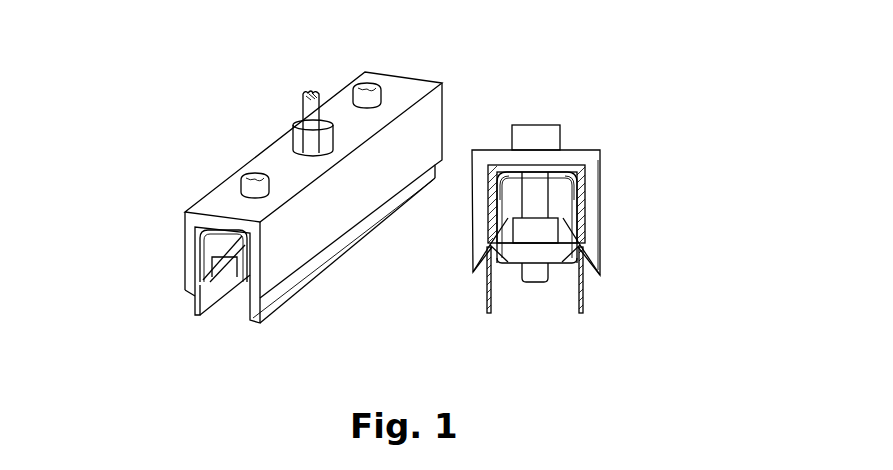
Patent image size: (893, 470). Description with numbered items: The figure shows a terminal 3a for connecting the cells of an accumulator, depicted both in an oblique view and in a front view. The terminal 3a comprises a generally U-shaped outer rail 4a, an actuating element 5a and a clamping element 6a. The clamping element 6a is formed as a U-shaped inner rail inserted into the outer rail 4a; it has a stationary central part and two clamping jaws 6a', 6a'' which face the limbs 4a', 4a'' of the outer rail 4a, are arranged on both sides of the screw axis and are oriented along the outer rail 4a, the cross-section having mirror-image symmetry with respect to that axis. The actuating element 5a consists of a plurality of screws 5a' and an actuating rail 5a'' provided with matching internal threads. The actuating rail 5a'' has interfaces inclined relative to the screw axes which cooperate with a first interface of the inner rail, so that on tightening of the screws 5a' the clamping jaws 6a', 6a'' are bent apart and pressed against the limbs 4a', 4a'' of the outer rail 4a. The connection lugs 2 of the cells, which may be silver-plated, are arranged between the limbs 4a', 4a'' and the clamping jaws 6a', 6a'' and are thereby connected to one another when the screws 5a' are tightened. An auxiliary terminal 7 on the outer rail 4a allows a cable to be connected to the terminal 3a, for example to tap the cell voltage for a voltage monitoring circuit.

The terminal 3a is at (118, 67).
The auxiliary terminal 7 is at (302, 104).
The outer rail 4a is at (480, 186).
The limb of the outer rail 4a' is at (645, 215).
The limb of the outer rail 4a'' is at (589, 263).
The actuating element 5a is at (631, 189).
The screw 5a' is at (422, 140).
The actuating rail 5a'' is at (405, 254).
The clamping element 6a is at (445, 167).
The clamping jaw 6a' is at (599, 127).
The clamping jaw 6a'' is at (635, 146).
The connection lug 2 is at (583, 309).